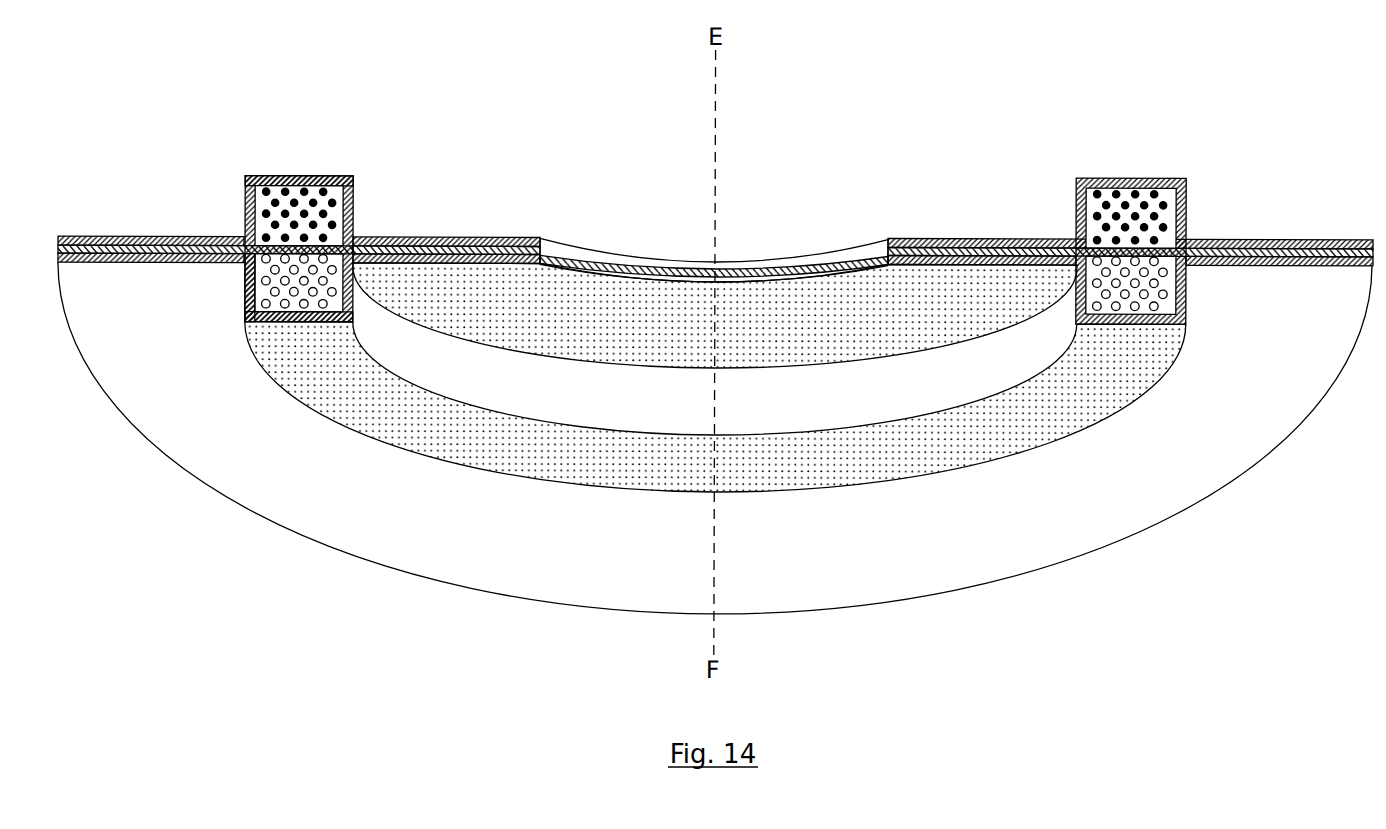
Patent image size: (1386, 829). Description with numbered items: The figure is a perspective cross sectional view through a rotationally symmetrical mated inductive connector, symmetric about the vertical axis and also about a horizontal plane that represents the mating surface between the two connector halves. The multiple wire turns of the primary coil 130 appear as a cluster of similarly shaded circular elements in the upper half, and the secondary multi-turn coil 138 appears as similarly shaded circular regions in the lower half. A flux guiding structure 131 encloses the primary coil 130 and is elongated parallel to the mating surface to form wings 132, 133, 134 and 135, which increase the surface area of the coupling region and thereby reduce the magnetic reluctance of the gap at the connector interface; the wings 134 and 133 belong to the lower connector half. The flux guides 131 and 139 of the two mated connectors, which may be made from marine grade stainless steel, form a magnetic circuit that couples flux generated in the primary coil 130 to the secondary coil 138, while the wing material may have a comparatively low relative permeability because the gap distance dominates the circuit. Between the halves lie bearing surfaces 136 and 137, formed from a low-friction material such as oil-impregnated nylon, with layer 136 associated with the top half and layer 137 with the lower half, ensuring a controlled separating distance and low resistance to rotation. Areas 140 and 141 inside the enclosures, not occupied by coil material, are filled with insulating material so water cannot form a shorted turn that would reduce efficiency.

The primary coil 130 is at (252, 213).
The flux guiding structure 131 is at (305, 176).
The wing 132 is at (443, 237).
The wing 133 is at (445, 264).
The wing 134 is at (128, 253).
The wing 135 is at (155, 237).
The bearing surface 136 is at (361, 246).
The bearing surface 137 is at (386, 244).
The secondary coil 138 is at (331, 281).
The flux guide 139 is at (246, 291).
The insulating material filled area 140 is at (304, 312).
The insulating material filled area 141 is at (277, 184).